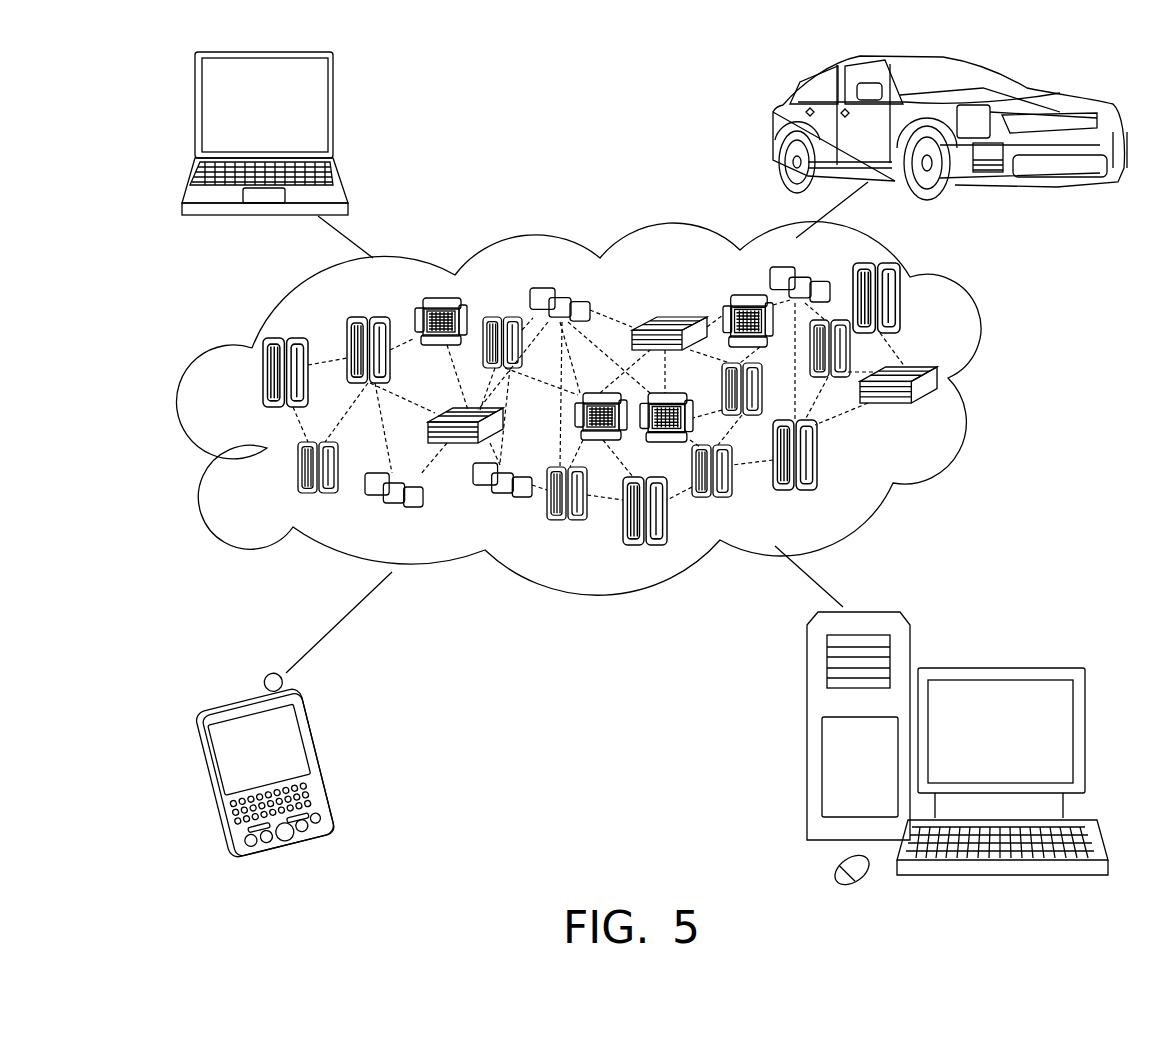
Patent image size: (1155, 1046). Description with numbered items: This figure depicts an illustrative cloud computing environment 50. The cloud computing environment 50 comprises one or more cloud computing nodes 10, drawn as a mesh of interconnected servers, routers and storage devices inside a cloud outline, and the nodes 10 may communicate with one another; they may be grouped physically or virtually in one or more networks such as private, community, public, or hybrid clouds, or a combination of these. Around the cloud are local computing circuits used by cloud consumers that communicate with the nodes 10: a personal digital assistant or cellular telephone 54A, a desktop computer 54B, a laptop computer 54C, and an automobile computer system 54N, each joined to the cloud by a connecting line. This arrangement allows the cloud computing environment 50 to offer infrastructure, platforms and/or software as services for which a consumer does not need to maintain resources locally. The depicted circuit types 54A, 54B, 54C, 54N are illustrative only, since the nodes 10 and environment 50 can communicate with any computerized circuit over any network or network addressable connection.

The cloud computing node 10 is at (940, 412).
The cloud computing environment 50 is at (997, 383).
The personal digital assistant or cellular telephone 54A is at (325, 765).
The desktop computer 54B is at (998, 667).
The laptop computer 54C is at (333, 112).
The automobile computer system 54N is at (778, 130).